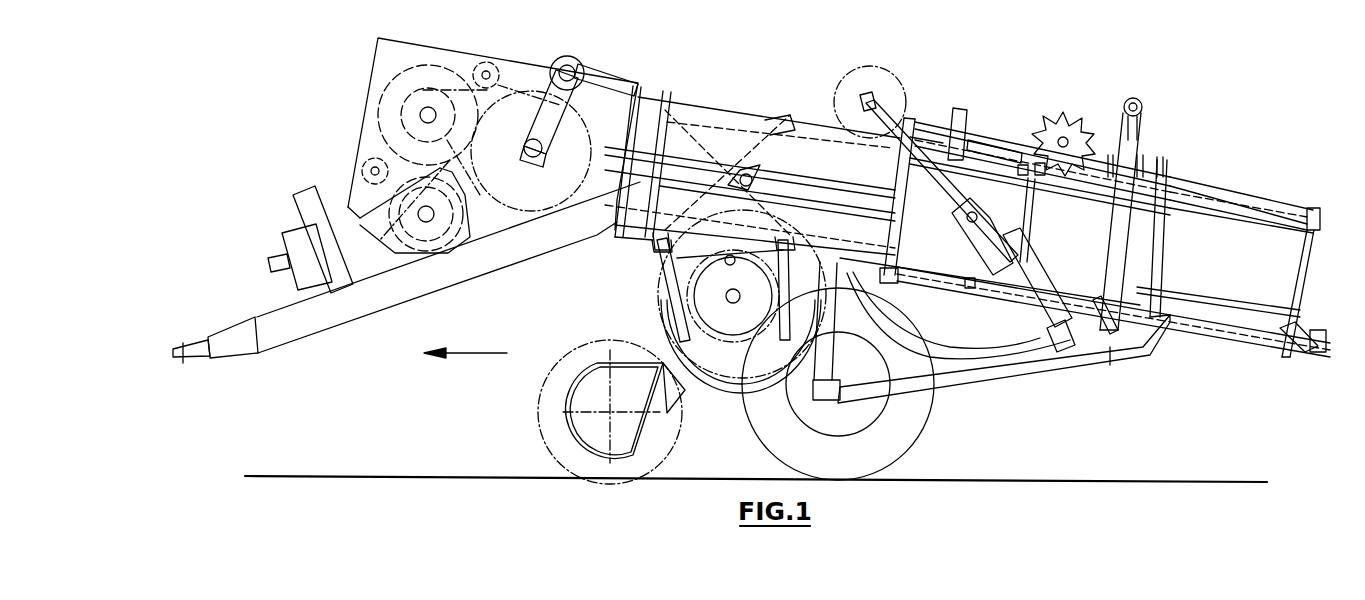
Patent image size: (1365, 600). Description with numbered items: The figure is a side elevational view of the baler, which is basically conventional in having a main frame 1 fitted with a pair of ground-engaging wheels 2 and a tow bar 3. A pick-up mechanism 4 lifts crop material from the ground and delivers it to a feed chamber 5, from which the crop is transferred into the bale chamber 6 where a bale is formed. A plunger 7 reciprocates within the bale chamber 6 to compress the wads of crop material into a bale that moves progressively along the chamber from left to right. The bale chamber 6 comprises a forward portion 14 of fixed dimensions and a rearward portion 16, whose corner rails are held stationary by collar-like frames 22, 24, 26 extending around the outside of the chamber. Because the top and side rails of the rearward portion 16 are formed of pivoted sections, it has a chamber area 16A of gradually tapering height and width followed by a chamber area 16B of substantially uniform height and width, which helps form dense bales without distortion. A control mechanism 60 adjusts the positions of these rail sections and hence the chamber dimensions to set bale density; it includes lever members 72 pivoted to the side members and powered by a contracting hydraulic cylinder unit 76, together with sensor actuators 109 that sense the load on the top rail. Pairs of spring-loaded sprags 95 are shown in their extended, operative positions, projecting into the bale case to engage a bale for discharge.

The main frame 1 is at (1005, 365).
The ground-engaging wheels 2 is at (912, 432).
The tow bar 3 is at (490, 260).
The pick-up mechanism 4 is at (650, 437).
The feed chamber 5 is at (713, 392).
The bale chamber 6 is at (1203, 233).
The plunger 7 is at (777, 245).
The forward portion 14 is at (697, 100).
The rearward portion 16 is at (1265, 190).
The chamber area 16A is at (945, 242).
The chamber area 16B is at (1242, 282).
The collar-like frame 22 is at (900, 135).
The collar-like frame 24 is at (1162, 170).
The collar-like frame 26 is at (1315, 192).
The control mechanism 60 is at (1115, 96).
The lever members 72 is at (1145, 130).
The hydraulic cylinder unit 76 is at (1142, 105).
The sprags 95 is at (941, 272).
The actuators 109 is at (1000, 135).